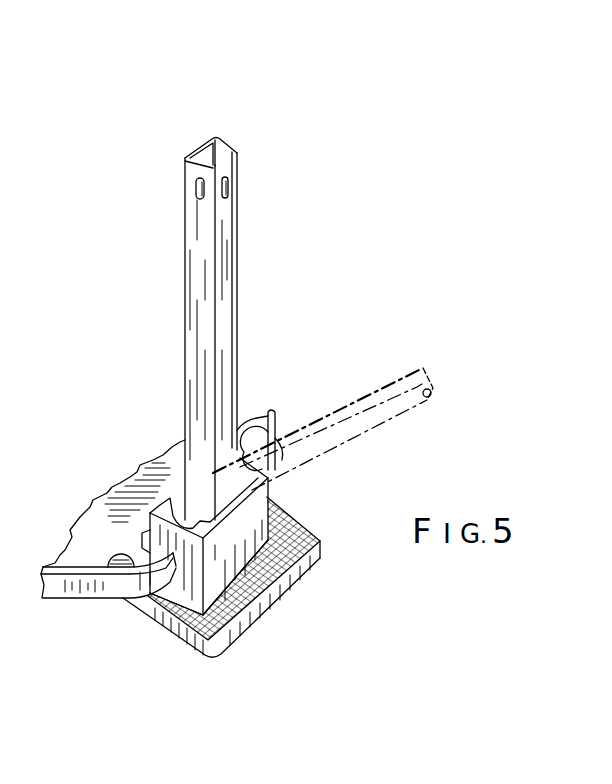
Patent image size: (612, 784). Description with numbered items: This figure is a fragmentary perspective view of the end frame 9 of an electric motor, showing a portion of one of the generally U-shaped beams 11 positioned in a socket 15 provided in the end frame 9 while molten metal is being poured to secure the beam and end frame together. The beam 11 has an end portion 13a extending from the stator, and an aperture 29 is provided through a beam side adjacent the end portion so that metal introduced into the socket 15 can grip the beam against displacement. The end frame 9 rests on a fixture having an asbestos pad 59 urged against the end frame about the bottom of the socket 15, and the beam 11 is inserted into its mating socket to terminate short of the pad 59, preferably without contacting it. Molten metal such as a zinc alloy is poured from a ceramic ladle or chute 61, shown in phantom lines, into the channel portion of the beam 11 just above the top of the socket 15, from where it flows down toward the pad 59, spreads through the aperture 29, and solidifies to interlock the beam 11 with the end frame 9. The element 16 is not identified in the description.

The beam 11 is at (197, 285).
The end portion 13a is at (222, 136).
The aperture 29 is at (198, 191).
The end frame 9 is at (92, 525).
The socket 15 is at (233, 567).
The asbestos pad 59 is at (283, 556).
The ceramic ladle or chute 61 is at (366, 430).
The ground surface 16 is at (320, 470).